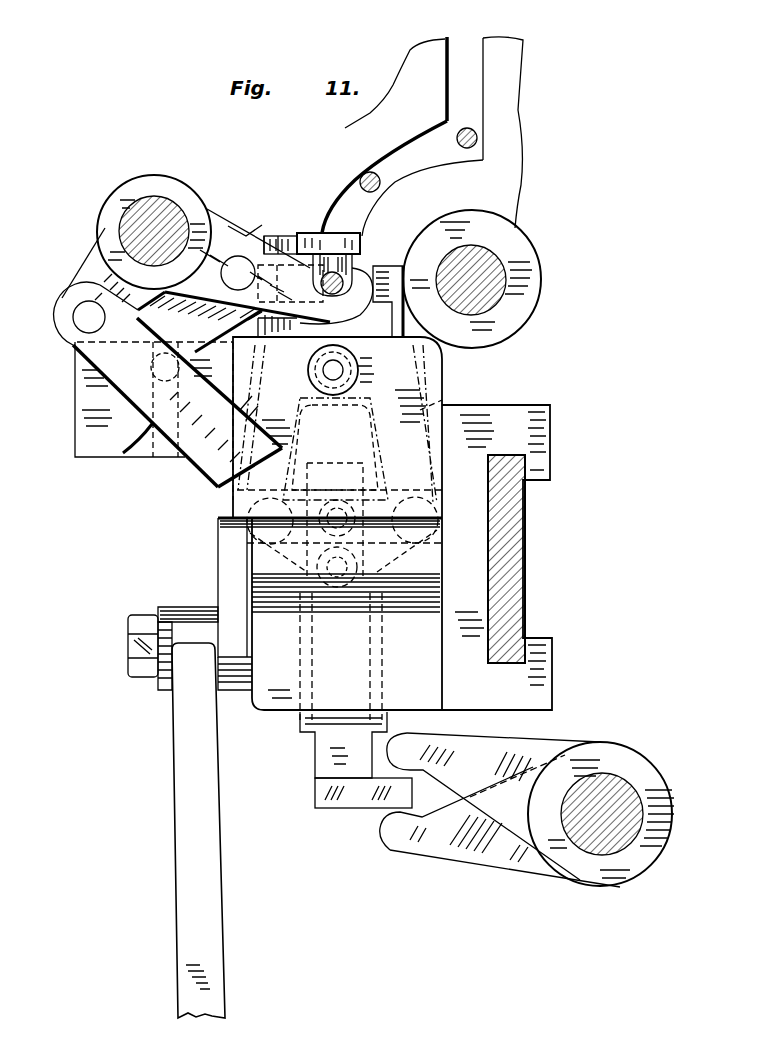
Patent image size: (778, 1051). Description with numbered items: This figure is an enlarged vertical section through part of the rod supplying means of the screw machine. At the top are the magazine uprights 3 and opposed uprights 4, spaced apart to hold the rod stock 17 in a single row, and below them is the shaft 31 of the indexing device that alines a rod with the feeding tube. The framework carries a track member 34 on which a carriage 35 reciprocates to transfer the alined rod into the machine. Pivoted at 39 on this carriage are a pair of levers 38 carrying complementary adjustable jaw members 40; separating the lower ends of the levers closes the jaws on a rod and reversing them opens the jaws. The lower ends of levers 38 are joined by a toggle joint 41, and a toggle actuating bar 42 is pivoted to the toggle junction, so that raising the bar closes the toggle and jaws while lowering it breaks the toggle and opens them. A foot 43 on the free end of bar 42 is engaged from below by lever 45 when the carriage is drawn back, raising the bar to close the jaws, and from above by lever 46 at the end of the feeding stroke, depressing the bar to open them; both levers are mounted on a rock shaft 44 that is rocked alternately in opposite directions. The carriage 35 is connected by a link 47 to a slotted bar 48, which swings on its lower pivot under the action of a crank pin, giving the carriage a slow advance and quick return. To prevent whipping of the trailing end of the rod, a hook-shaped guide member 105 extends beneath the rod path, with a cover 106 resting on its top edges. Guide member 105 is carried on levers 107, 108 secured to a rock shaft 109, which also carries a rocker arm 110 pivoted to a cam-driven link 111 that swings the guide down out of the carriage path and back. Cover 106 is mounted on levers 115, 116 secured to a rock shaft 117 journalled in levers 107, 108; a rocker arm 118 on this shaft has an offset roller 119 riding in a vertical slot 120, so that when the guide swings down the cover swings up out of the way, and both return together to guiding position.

The uprights 3 is at (497, 103).
The uprights 4 is at (421, 79).
The rod stock 17 is at (371, 172).
The shaft 31 is at (490, 275).
The track member 34 is at (520, 556).
The carriage 35 is at (433, 373).
The levers 38 is at (420, 410).
The pivot 39 is at (343, 372).
The adjustable jaw members 40 is at (385, 268).
The toggle joint 41 is at (318, 615).
The toggle actuating bar 42 is at (325, 758).
The foot 43 is at (360, 805).
The rock shaft 44 is at (602, 790).
The lever 45 is at (433, 850).
The lever 46 is at (530, 750).
The link 47 is at (232, 580).
The slotted bar 48 is at (178, 760).
The hook-shaped guide member 105 is at (352, 308).
The cover 106 is at (300, 233).
The lever 107 is at (213, 213).
The lever 108 is at (237, 228).
The rock shaft 109 is at (160, 218).
The rocker arm 110 is at (80, 260).
The link 111 is at (205, 297).
The lever 115 is at (263, 234).
The lever 116 is at (277, 234).
The rock shaft 117 is at (238, 271).
The rocker arm 118 is at (180, 318).
The offset roller 119 is at (152, 358).
The vertical slot 120 is at (170, 455).